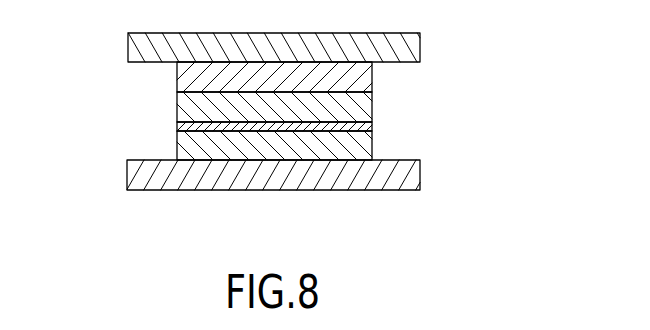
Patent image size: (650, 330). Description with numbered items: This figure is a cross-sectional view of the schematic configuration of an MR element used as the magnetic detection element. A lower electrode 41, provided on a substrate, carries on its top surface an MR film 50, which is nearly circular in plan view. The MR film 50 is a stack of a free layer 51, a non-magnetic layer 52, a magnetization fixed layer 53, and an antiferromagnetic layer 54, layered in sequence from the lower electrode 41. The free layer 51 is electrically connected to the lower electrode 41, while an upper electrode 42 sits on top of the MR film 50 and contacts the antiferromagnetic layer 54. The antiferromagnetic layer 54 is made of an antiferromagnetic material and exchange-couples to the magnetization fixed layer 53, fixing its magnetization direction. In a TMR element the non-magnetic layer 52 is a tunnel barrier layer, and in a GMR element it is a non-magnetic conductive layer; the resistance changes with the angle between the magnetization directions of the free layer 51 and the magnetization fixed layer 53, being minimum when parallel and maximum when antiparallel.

The lower electrode 41 is at (127, 172).
The upper electrode 42 is at (128, 44).
The MR film 50 is at (366, 108).
The free layer 51 is at (338, 149).
The non-magnetic layer 52 is at (372, 124).
The magnetization fixed layer 53 is at (372, 105).
The antiferromagnetic layer 54 is at (372, 80).